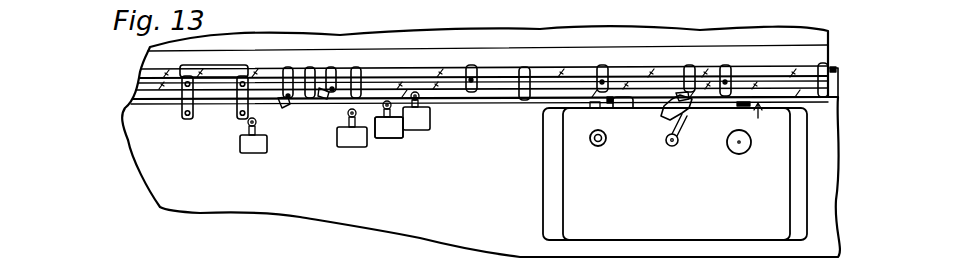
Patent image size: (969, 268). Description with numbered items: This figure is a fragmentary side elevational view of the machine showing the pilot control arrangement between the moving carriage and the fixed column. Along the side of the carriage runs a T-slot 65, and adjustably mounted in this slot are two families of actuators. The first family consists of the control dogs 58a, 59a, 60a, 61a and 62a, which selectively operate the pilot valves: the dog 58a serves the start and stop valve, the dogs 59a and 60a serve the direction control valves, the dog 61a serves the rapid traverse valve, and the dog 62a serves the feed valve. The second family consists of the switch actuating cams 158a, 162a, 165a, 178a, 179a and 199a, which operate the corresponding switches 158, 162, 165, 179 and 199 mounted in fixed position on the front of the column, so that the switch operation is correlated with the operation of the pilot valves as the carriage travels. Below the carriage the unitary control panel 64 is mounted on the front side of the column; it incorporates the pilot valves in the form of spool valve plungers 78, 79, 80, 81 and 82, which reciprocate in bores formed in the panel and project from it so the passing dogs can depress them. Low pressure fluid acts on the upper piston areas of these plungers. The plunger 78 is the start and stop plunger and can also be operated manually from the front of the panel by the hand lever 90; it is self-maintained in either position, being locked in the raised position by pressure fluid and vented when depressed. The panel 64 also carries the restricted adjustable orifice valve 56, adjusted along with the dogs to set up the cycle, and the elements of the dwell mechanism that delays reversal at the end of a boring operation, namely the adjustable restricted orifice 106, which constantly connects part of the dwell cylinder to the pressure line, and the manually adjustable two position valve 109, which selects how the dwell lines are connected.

The T-slot 65 is at (493, 84).
The switch actuating cam 165a is at (184, 118).
The switch 165 is at (246, 153).
The switch actuating cam 162a is at (280, 106).
The switch 162 is at (342, 147).
The switch actuating cam 199a is at (307, 67).
The switch 199 is at (386, 139).
The switch actuating cam 158a is at (329, 67).
The switch 158 is at (380, 139).
The switch actuating cam 179a is at (358, 68).
The switch 179 is at (430, 125).
The switch actuating cam 178a is at (468, 65).
The control dog 60a is at (528, 66).
The control dog 62a is at (597, 66).
The control dog 61a is at (684, 68).
The control dog 58a is at (726, 67).
The control dog 59a is at (818, 68).
The control panel 64 is at (573, 157).
The spool valve plunger 80 is at (595, 106).
The spool valve plunger 82 is at (624, 105).
The spool valve plunger 78 is at (672, 107).
The hand lever 90 is at (684, 134).
The spool valve plunger 81 is at (742, 104).
The spool valve plunger 79 is at (760, 121).
The restricted adjustable orifice valve 56 is at (742, 154).
The two position valve 109 is at (605, 143).
The adjustable restricted orifice 106 is at (597, 148).